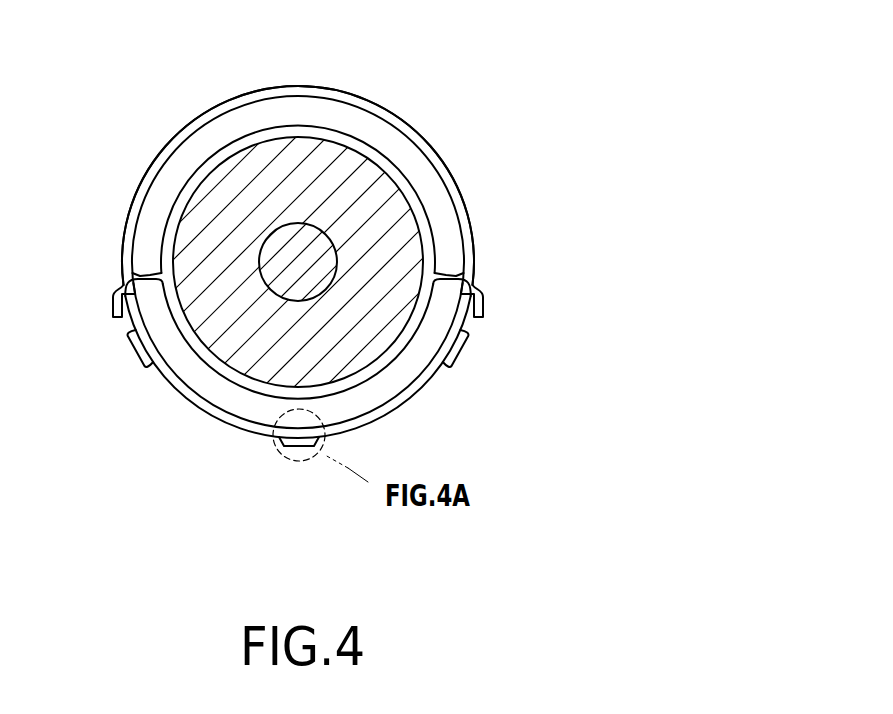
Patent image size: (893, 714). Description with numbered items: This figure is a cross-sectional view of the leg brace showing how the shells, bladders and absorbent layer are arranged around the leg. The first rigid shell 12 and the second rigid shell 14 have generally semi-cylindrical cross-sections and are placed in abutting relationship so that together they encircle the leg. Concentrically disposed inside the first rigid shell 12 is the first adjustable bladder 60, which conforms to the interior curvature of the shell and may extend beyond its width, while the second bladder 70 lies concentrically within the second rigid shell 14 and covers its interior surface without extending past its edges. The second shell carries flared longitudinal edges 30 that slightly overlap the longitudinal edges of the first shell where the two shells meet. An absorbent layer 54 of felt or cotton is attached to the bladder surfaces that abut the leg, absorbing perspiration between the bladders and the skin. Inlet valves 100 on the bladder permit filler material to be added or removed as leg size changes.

The first rigid shell 12 is at (172, 406).
The second rigid shell 14 is at (366, 92).
The flared longitudinal edges 30 is at (110, 298).
The absorbent layer 54 is at (418, 215).
The first adjustable bladder 60 is at (247, 407).
The second bladder 70 is at (408, 158).
The inlet valve 100 is at (130, 352).